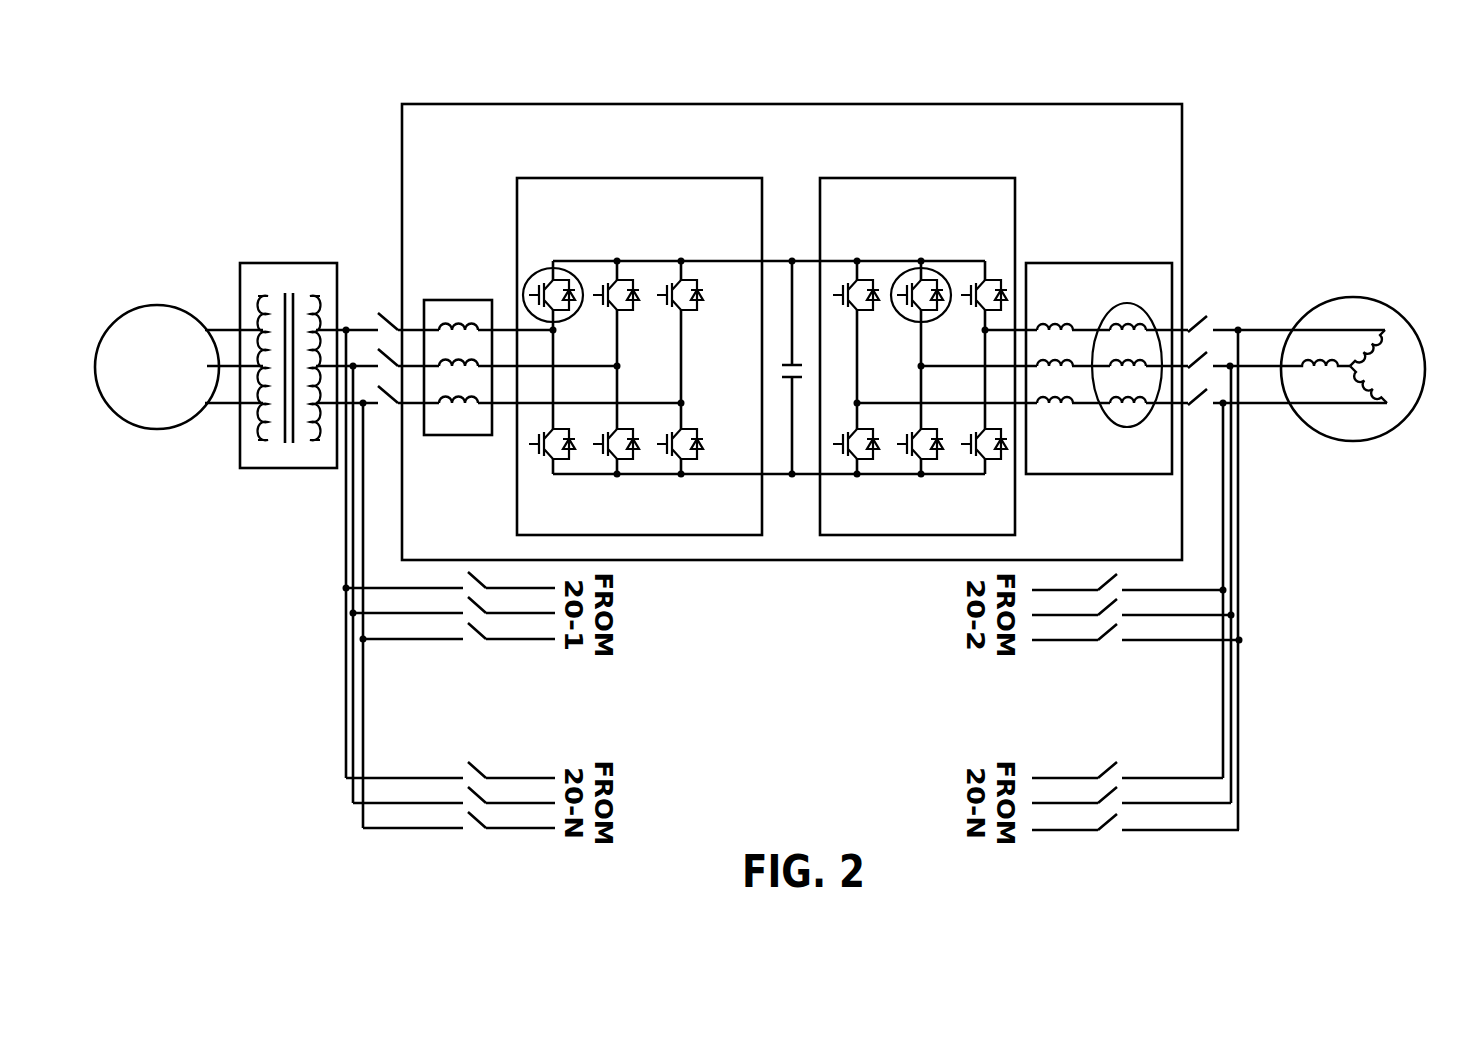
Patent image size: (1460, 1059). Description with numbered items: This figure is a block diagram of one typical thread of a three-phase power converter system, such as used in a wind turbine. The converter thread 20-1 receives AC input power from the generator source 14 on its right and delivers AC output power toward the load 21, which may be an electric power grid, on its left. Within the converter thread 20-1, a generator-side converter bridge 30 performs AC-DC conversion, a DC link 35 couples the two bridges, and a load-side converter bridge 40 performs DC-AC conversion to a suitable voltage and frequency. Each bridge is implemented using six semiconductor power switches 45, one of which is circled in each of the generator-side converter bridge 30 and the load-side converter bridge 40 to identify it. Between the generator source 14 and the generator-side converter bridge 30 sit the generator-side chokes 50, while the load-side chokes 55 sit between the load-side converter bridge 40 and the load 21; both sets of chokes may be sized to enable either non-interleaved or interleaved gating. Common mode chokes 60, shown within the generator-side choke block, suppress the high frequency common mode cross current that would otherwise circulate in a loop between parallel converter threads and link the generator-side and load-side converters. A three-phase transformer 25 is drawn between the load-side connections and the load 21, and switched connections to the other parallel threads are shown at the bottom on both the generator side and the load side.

The generator source 14 is at (1385, 300).
The converter thread 20-1 is at (1123, 104).
The load 21 is at (155, 430).
The three-phase transformer 25 is at (290, 468).
The generator-side converter bridge 30 is at (912, 177).
The DC link 35 is at (782, 365).
The load-side converter bridge 40 is at (640, 177).
The semiconductor power switch 45 is at (542, 267).
The generator-side chokes 50 is at (1052, 325).
The load-side chokes 55 is at (452, 300).
The common mode chokes 60 is at (1130, 427).